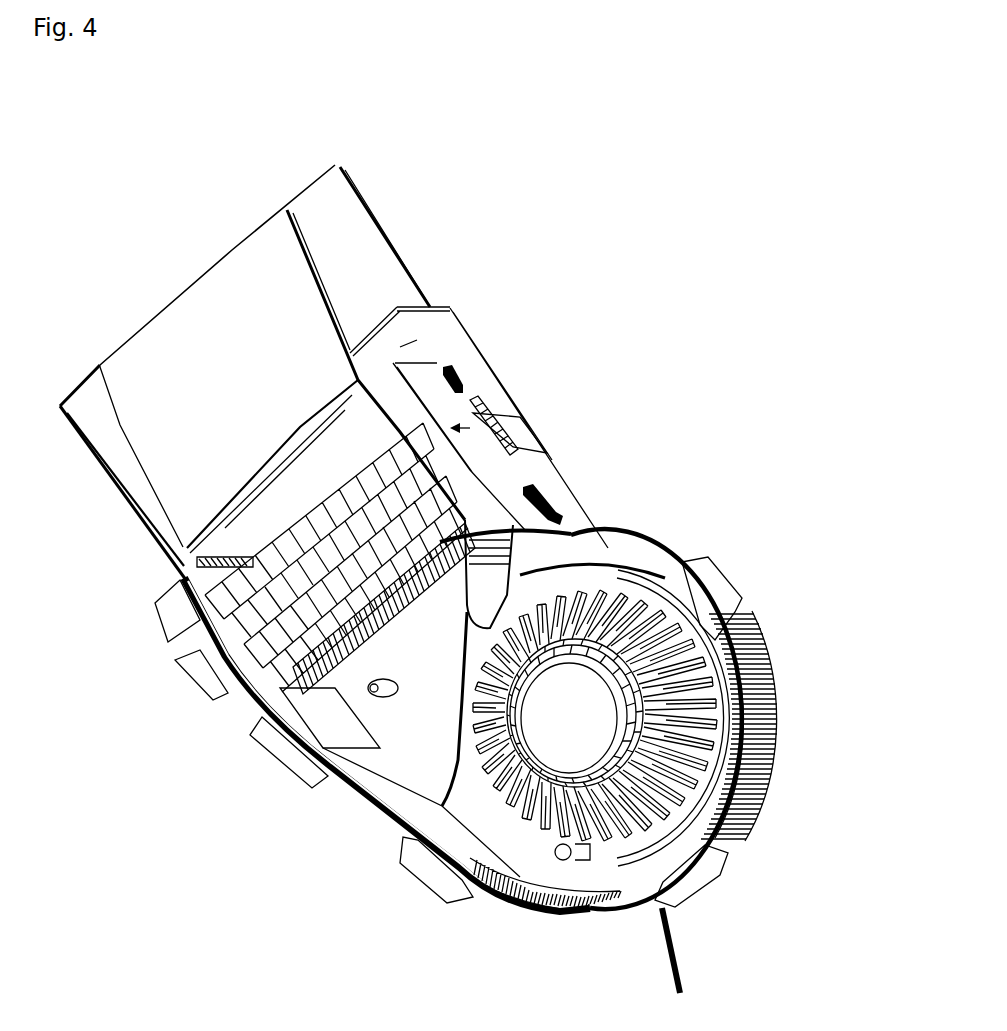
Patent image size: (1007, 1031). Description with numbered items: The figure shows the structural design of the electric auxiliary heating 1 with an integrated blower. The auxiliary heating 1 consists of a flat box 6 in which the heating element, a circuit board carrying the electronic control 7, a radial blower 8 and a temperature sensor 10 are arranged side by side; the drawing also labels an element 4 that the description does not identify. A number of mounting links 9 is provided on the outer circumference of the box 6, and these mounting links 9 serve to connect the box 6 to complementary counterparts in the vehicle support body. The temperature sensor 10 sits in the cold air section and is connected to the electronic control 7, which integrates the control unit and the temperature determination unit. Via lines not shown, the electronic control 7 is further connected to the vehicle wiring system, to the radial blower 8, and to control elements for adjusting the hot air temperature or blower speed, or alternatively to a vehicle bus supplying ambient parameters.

The auxiliary heating 1 is at (666, 272).
The filter element 4 is at (423, 490).
The flat box 6 is at (528, 908).
The electronic control 7 is at (523, 538).
The radial blower 8 is at (673, 750).
The mounting links 9 is at (710, 580).
The temperature sensor 10 is at (363, 703).